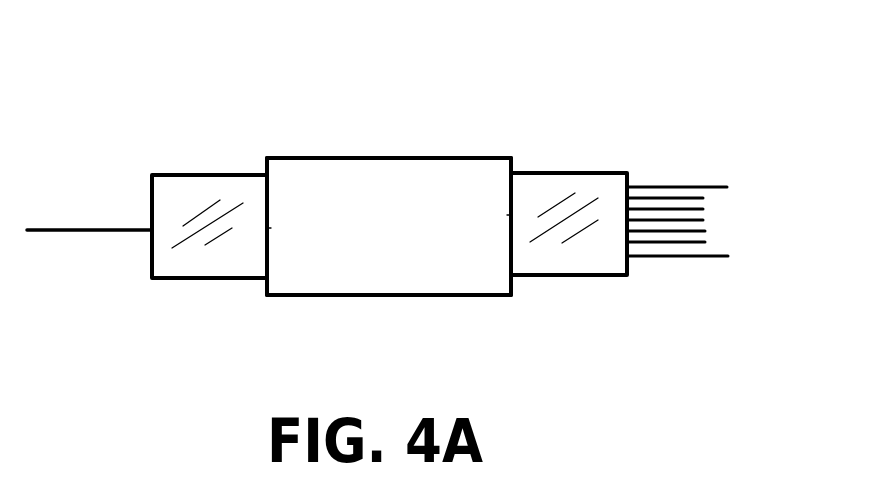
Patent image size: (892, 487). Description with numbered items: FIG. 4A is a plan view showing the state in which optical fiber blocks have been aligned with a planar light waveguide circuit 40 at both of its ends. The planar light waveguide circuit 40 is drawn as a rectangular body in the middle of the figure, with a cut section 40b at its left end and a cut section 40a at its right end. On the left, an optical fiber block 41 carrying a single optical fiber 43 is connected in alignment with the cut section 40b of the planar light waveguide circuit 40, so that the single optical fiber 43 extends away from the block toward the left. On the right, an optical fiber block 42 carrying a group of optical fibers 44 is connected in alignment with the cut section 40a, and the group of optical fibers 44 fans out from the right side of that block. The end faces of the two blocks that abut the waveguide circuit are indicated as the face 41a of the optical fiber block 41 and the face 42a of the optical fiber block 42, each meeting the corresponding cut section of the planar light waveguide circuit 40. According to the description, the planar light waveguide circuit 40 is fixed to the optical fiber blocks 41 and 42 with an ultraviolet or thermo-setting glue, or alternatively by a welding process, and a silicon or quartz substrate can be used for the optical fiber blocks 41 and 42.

The planar light waveguide circuit 40 is at (358, 195).
The cut section 40a is at (513, 282).
The cut section 40b is at (266, 163).
The optical fiber block 41 is at (200, 203).
The end face of glass block 41a is at (267, 228).
The optical fiber block 42 is at (558, 207).
The end face of glass block 42a is at (511, 215).
The single optical fiber 43 is at (86, 228).
The group of optical fibers 44 is at (743, 272).